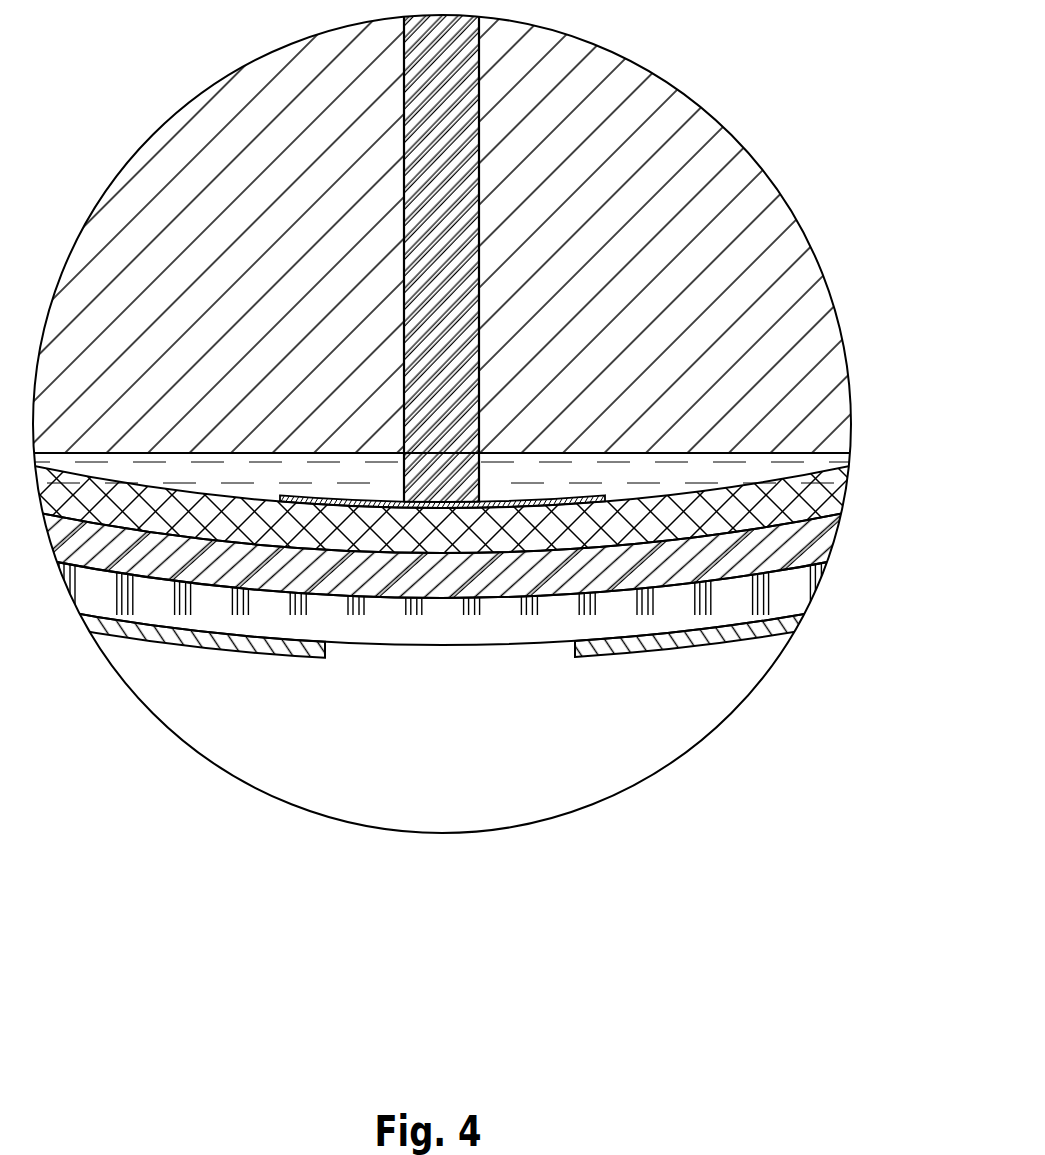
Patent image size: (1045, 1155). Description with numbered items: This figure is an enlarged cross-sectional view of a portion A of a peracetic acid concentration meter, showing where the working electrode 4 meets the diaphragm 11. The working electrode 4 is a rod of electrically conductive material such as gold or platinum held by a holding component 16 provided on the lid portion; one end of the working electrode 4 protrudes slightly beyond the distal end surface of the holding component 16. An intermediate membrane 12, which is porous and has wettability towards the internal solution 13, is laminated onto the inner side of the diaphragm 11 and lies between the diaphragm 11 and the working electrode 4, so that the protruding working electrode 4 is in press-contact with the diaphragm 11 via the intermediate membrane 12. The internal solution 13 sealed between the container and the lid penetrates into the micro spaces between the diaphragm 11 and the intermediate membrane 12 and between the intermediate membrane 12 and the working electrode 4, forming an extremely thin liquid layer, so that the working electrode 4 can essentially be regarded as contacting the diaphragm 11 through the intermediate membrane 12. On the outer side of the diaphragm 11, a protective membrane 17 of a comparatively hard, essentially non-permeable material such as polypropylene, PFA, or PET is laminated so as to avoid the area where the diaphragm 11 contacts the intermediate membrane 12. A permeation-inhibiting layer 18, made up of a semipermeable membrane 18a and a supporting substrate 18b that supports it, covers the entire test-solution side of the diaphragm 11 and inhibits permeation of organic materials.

The working electrode 4 is at (480, 235).
The holding component 16 is at (680, 353).
The internal solution 13 is at (718, 476).
The intermediate membrane 12 is at (342, 500).
The diaphragm 11 is at (352, 556).
The permeation-inhibiting layer 18 is at (442, 697).
The semipermeable membrane 18a is at (552, 647).
The supporting substrate 18b is at (437, 603).
The protective membrane 17 is at (202, 645).
The portion A is at (112, 668).